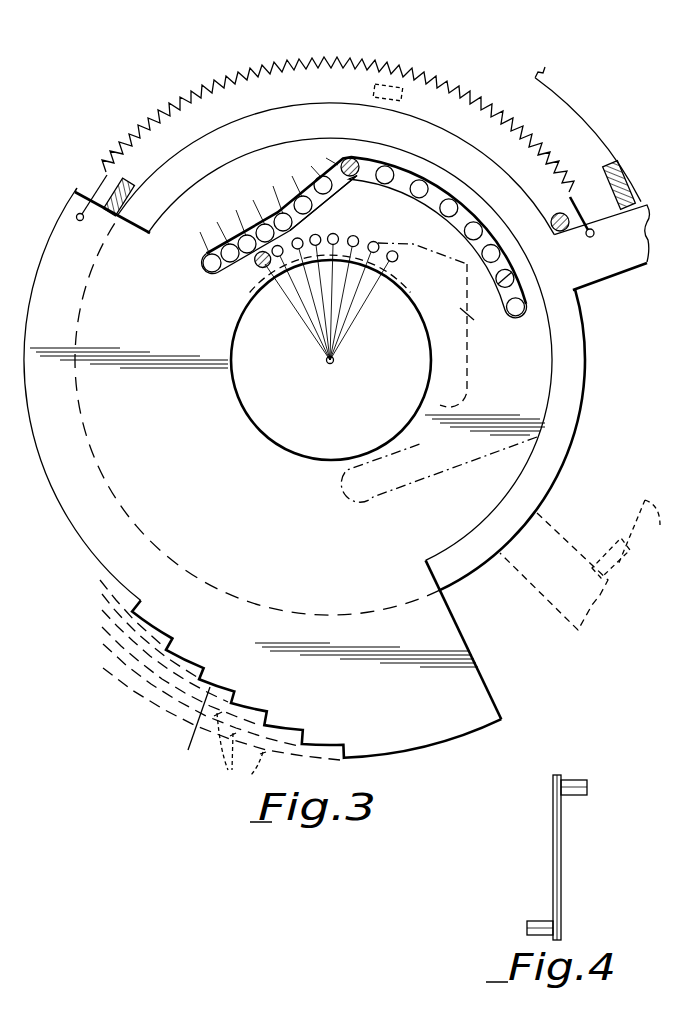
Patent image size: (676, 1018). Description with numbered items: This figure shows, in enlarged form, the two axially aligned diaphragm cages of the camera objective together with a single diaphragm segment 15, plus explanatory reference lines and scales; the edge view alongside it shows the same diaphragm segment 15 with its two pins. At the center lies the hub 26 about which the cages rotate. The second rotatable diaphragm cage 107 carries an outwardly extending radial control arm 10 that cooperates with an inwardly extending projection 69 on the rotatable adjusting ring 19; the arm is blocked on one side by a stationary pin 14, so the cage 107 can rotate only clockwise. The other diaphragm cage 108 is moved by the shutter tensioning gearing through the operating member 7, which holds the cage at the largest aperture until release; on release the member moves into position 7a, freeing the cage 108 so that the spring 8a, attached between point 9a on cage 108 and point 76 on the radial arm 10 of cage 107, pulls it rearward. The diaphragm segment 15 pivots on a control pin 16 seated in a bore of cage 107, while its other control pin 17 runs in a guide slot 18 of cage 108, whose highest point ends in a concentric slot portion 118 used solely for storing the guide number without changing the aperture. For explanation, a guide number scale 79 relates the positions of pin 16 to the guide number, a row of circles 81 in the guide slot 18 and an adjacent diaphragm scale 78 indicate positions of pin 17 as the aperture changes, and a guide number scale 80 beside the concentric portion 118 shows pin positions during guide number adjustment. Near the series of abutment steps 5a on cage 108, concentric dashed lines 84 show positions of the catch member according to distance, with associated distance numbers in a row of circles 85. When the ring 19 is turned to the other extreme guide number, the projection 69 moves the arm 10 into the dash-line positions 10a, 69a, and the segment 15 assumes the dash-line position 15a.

In FIG. 3, the spring 8a is at (220, 80).
In FIG. 3, the operating member position 7a is at (390, 90).
In FIG. 3, the second rotatable diaphragm cage 107 is at (143, 200).
In FIG. 3, the diaphragm cage 108 is at (192, 197).
In FIG. 3, the diaphragm scale 78 is at (240, 197).
In FIG. 3, the guide slot 18 is at (290, 250).
In FIG. 3, the control pin 17 is at (345, 160).
In FIG. 4, the control pin 17 is at (578, 782).
In FIG. 3, the guide number scale 80 is at (409, 163).
In FIG. 3, the concentric slot portion 118 is at (436, 195).
In FIG. 3, the rotatable adjusting ring 19 is at (558, 92).
In FIG. 3, the stationary pin 14 is at (557, 212).
In FIG. 3, the inwardly extending projection 69 is at (625, 180).
In FIG. 3, the operating member 7 is at (112, 195).
In FIG. 3, the attachment point 9a is at (76, 217).
In FIG. 3, the row of circles 81 is at (238, 262).
In FIG. 3, the control pin 16 is at (258, 268).
In FIG. 4, the control pin 16 is at (534, 920).
In FIG. 3, the guide number scale 79 is at (290, 292).
In FIG. 3, the diaphragm segment 15 is at (470, 316).
In FIG. 4, the diaphragm segment 15 is at (561, 848).
In FIG. 3, the attachment point 76 is at (591, 237).
In FIG. 3, the radial control arm 10 is at (630, 252).
In FIG. 3, the hub disk 26 is at (344, 418).
In FIG. 3, the diaphragm segment position 15a is at (460, 455).
In FIG. 3, the radial arm position 10a is at (556, 538).
In FIG. 3, the projection position 69a is at (613, 532).
In FIG. 3, the row of circles 85 is at (82, 622).
In FIG. 3, the abutment steps 5a is at (190, 730).
In FIG. 3, the concentric dashed lines 84 is at (240, 750).